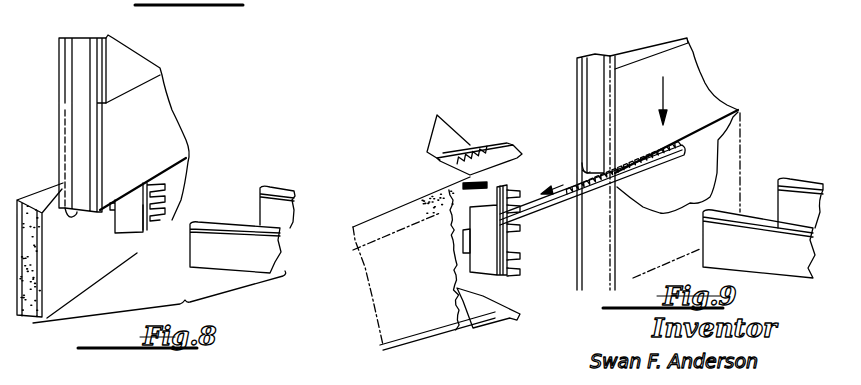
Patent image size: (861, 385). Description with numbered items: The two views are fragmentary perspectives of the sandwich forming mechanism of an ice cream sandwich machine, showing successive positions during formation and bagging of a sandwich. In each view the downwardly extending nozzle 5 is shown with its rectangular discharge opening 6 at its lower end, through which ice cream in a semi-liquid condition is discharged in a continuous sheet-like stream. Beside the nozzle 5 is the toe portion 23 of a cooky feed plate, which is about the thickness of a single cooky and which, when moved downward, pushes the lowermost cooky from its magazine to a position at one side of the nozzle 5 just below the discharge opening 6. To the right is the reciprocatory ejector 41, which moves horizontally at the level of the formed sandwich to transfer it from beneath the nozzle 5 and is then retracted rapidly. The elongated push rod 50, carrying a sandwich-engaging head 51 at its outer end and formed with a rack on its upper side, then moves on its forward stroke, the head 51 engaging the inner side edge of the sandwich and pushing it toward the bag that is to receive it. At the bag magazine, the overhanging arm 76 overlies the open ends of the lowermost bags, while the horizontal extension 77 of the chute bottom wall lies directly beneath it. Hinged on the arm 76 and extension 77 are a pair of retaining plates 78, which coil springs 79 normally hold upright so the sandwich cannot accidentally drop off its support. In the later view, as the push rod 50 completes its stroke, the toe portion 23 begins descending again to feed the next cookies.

In FIG. 8, the nozzle 5 is at (78, 46).
In FIG. 9, the nozzle 5 is at (627, 56).
In FIG. 8, the toe portion 23 is at (131, 70).
In FIG. 9, the toe portion 23 is at (707, 103).
In FIG. 8, the discharge opening 6 is at (67, 208).
In FIG. 9, the discharge opening 6 is at (580, 170).
In FIG. 8, the ejector 41 is at (280, 184).
In FIG. 9, the ejector 41 is at (794, 178).
In FIG. 8, the push rod 50 is at (150, 187).
In FIG. 9, the push rod 50 is at (550, 218).
In FIG. 8, the sandwich-engaging head 51 is at (128, 220).
In FIG. 9, the sandwich-engaging head 51 is at (483, 265).
In FIG. 9, the overhanging arm 76 is at (437, 162).
In FIG. 9, the horizontal extension 77 is at (478, 317).
In FIG. 9, the retaining plates 78 is at (517, 157).
In FIG. 9, the coil springs 79 is at (470, 147).